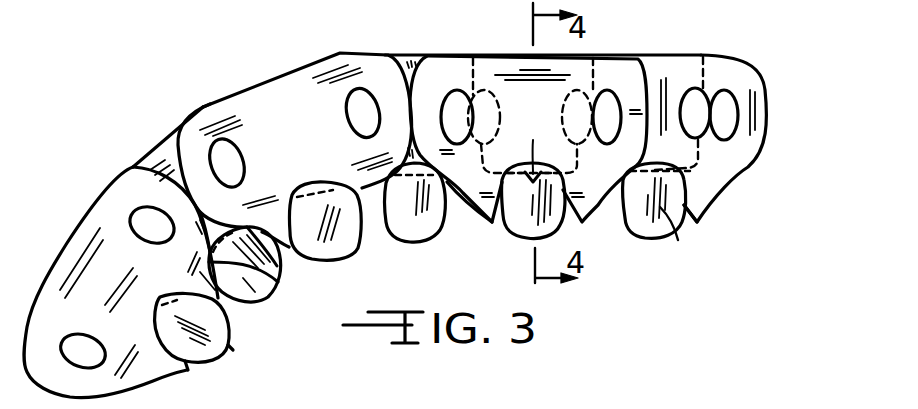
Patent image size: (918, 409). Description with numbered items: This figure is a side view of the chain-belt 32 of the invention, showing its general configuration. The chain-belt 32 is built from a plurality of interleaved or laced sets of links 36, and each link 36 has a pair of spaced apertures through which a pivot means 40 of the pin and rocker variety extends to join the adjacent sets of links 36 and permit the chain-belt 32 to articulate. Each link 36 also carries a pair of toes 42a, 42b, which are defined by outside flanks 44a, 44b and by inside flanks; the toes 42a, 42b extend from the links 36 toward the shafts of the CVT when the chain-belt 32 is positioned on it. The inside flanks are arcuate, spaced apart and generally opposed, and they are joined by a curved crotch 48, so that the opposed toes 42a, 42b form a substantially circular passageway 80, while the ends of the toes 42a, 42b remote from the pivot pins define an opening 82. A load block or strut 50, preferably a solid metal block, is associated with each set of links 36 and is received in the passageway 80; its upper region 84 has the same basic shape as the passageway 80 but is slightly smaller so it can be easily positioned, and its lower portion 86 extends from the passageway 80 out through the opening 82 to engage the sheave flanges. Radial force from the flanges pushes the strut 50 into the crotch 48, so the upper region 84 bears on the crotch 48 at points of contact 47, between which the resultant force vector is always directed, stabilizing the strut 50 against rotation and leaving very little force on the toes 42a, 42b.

The chain-belt 32 is at (350, 51).
The link 36 is at (253, 100).
The pivot means 40 is at (728, 92).
The toe 42a is at (190, 366).
The toe 42b is at (215, 303).
The outside flank 44a is at (300, 243).
The outside flank 44b is at (392, 218).
The points of contact 47 is at (274, 277).
The curved crotch 48 is at (315, 183).
The strut 50 is at (222, 346).
The passageway 80 is at (531, 137).
The opening 82 is at (522, 220).
The upper region 84 is at (700, 186).
The lower portion 86 is at (653, 225).